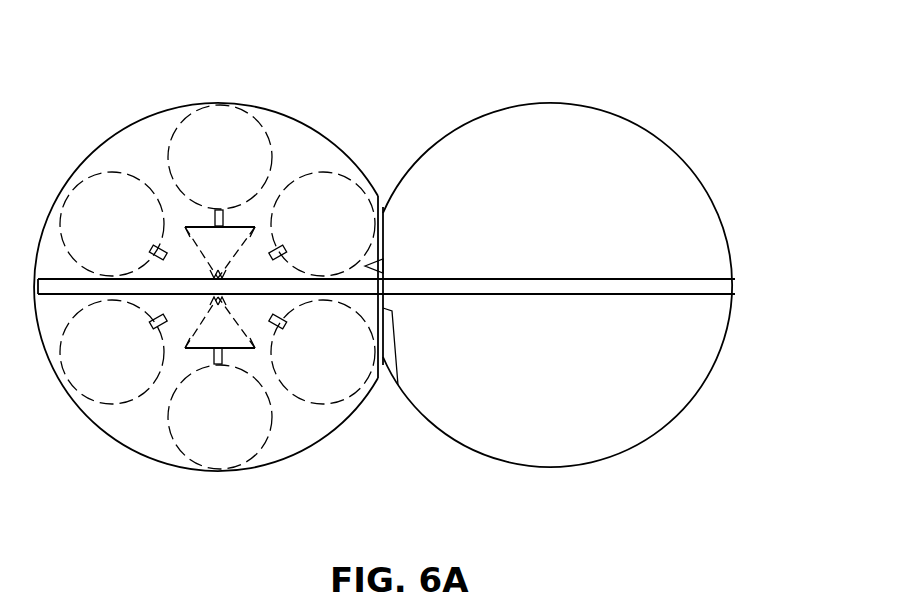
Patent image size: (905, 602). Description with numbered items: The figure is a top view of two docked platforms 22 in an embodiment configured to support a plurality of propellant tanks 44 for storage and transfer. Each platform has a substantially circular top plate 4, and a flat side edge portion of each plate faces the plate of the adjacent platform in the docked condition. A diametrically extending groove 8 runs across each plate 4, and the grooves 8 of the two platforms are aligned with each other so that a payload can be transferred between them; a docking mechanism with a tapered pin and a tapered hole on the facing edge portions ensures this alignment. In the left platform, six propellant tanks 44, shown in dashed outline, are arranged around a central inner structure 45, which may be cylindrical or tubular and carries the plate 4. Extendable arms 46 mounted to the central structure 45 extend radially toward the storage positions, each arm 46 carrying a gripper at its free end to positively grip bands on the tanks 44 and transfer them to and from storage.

The platform 22 is at (113, 133).
The circular shaped plate 4 is at (625, 400).
The propellant tank 44 is at (230, 135).
The central inner structure 45 is at (182, 237).
The extendable arm 46 is at (220, 210).
The diametrically extending groove 8 is at (63, 290).